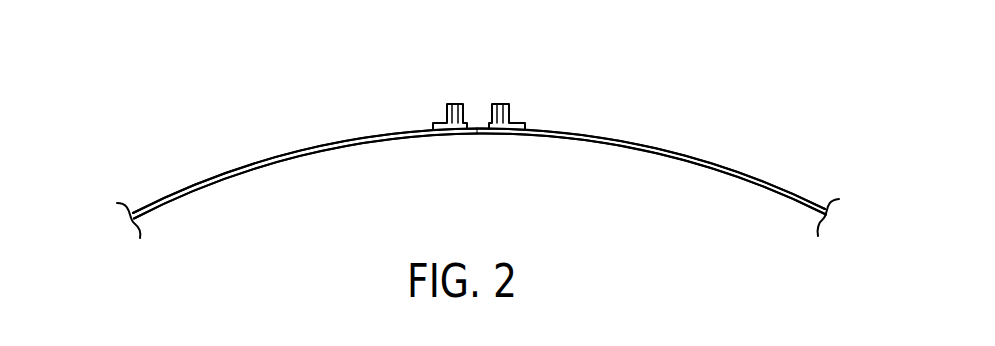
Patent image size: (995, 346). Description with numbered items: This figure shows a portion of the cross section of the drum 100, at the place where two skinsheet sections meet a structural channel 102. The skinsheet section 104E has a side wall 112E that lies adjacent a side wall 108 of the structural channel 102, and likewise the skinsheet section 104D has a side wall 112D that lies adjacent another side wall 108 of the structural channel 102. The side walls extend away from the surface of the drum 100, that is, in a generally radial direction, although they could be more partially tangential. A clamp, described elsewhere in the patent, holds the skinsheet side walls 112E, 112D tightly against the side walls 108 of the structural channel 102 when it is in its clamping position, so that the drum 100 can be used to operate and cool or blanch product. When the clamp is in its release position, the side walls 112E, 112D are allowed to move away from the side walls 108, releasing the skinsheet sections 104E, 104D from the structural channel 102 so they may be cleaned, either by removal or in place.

The drum 100 is at (717, 98).
The structural channel 102 is at (473, 96).
The skinsheet section 104E is at (300, 150).
The skinsheet section 104D is at (661, 150).
The side wall 108 is at (488, 119).
The side wall 112E is at (446, 118).
The side wall 112D is at (510, 117).